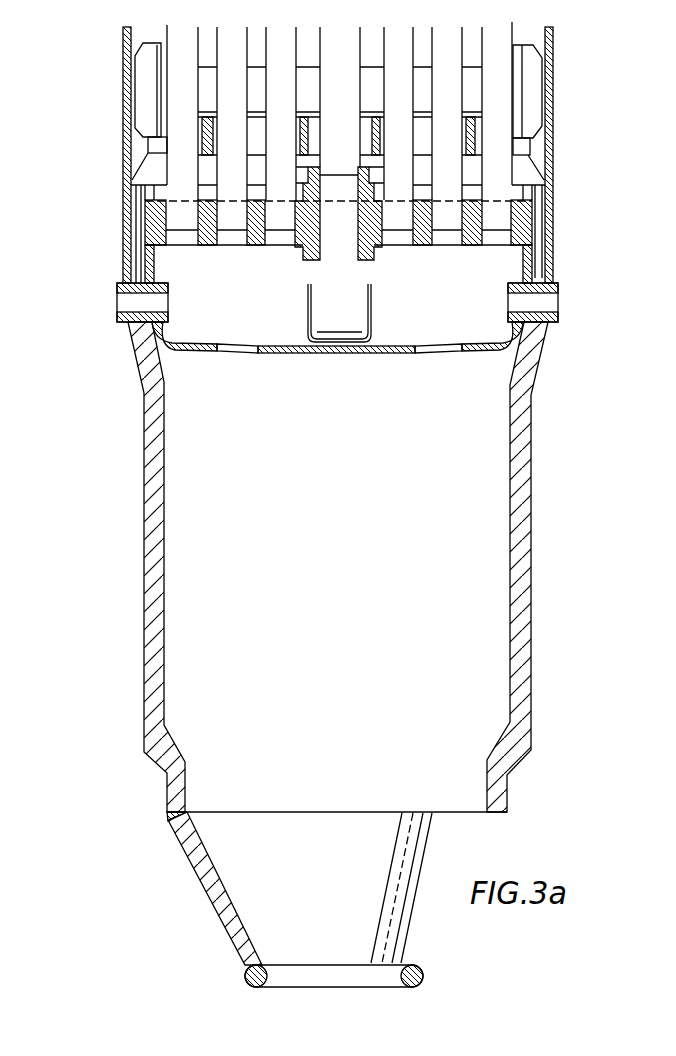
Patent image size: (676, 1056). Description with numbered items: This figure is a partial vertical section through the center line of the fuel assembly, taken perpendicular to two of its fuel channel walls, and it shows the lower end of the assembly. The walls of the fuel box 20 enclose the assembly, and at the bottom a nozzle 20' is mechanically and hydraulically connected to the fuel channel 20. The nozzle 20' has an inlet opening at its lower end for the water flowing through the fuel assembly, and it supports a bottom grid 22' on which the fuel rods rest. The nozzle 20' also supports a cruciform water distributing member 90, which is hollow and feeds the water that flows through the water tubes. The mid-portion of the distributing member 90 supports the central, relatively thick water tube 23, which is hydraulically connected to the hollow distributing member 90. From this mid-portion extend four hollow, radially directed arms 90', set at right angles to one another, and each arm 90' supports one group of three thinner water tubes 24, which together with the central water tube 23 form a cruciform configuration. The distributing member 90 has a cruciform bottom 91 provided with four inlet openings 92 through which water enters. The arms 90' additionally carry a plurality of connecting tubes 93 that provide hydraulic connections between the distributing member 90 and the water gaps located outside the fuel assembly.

The fuel box 20 is at (357, 152).
The bottom grid 22' is at (375, 111).
The thinner water tubes 24 is at (230, 167).
The central water tube 23 is at (337, 143).
The arms 90' is at (335, 234).
The connecting tubes 93 is at (135, 302).
The inlet openings 92 is at (233, 353).
The cruciform bottom 91 is at (293, 357).
The water distributing member 90 is at (349, 379).
The nozzle 20' is at (291, 654).